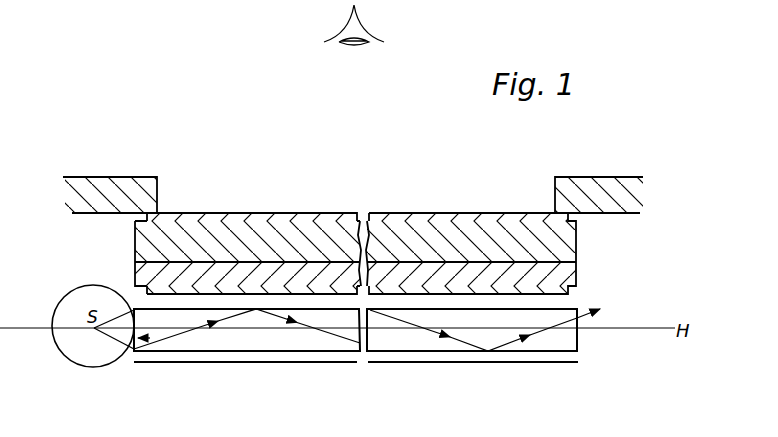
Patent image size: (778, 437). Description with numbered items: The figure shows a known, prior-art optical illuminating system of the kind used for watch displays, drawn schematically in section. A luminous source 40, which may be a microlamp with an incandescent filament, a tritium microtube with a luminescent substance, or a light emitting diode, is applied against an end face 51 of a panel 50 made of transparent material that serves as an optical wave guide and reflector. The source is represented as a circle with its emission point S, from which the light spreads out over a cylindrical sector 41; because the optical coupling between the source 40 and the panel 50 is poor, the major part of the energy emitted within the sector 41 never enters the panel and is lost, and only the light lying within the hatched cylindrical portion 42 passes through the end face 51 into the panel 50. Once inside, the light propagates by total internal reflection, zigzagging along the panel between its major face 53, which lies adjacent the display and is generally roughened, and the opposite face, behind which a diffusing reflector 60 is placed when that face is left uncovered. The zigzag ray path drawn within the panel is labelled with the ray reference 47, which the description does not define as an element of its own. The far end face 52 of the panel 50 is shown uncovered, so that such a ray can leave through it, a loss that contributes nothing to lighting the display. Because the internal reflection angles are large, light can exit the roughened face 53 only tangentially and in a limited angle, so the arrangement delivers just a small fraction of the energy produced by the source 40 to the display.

The luminous source 40 is at (58, 356).
The cylindrical sector 41 is at (80, 303).
The hached cylindrical portion 42 is at (122, 341).
The light rays 47 is at (216, 324).
The panel 50 is at (402, 338).
The end face 51 is at (150, 341).
The end face 52 is at (580, 342).
The major face 53 is at (568, 304).
The diffusing reflector 60 is at (579, 364).